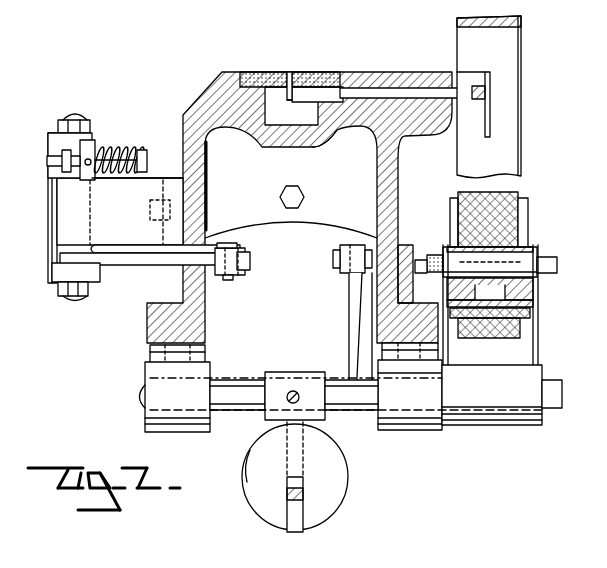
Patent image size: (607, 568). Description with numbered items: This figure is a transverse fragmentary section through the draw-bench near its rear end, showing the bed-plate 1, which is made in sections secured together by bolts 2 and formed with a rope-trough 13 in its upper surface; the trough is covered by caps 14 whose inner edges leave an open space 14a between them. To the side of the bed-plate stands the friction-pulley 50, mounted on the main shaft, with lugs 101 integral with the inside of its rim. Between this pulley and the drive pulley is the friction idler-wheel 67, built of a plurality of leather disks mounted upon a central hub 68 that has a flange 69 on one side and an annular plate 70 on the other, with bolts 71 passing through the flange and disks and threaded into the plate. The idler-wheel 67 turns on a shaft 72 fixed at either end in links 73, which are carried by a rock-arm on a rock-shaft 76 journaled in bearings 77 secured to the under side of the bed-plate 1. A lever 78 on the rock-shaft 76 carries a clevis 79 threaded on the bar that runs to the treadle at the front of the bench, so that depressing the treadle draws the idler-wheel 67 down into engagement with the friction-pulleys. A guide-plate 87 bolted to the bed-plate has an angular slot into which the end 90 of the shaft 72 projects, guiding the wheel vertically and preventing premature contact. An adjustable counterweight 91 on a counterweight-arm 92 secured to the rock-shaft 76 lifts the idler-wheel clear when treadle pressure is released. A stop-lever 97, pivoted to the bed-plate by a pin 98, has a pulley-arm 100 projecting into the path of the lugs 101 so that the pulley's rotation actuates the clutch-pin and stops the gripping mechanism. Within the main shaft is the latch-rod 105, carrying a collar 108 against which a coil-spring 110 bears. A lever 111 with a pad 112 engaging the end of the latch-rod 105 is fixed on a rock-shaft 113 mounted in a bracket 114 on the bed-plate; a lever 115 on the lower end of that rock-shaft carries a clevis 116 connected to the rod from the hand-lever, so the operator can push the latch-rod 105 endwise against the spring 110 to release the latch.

The bed-plate 1 is at (207, 95).
The bolts 2 is at (306, 196).
The rope-trough 13 is at (283, 122).
The caps 14 is at (277, 74).
The open space 14a is at (290, 70).
The friction-pulley 50 is at (522, 128).
The friction idler-wheel 67 is at (520, 200).
The central hub 68 is at (520, 288).
The flange 69 is at (530, 220).
The annular plate 70 is at (452, 200).
The bolts 71 is at (522, 325).
The shaft 72 is at (520, 258).
The links 73 is at (450, 352).
The rock-shaft 76 is at (232, 380).
The bearings 77 is at (178, 432).
The lever 78 is at (349, 320).
The clevis 79 is at (338, 270).
The guide-plate 87 is at (404, 244).
The end of the shaft 90 is at (421, 258).
The adjustable counterweight 91 is at (338, 503).
The counterweight-arm 92 is at (292, 505).
The stop-lever 97 is at (383, 90).
The pin 98 is at (333, 134).
The pulley-arm 100 is at (490, 92).
The lugs 101 is at (480, 78).
The latch-rod 105 is at (147, 155).
The collar 108 is at (90, 140).
The coil-spring 110 is at (124, 148).
The lever 111 is at (50, 138).
The pad 112 is at (48, 160).
The rock-shaft 113 is at (75, 302).
The bracket 114 is at (56, 232).
The lever 115 is at (135, 266).
The clevis 116 is at (243, 277).